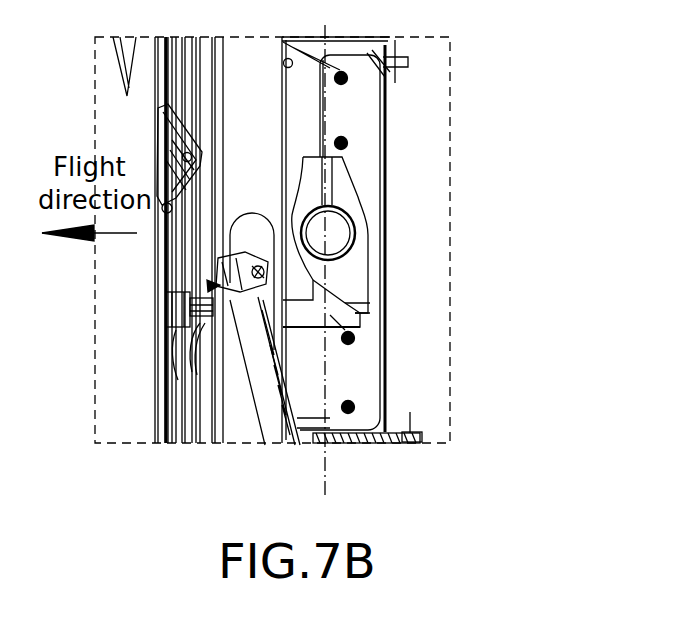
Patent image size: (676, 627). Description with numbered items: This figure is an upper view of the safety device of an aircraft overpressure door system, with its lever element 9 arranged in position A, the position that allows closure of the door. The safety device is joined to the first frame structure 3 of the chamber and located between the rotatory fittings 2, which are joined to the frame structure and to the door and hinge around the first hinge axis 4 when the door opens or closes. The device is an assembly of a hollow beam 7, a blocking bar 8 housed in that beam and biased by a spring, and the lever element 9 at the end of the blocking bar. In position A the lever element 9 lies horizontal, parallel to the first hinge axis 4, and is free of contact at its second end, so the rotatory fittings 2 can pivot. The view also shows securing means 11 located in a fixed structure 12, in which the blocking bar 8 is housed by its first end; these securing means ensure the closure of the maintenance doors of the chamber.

The rotatory fitting 2 is at (383, 448).
The first frame structure 3 is at (240, 112).
The first hinge axis 4 is at (328, 113).
The hollow beam 7 is at (352, 338).
The blocking bar 8 is at (170, 367).
The lever element 9 is at (357, 230).
The securing means 11 is at (150, 283).
The fixed structure 12 is at (202, 447).